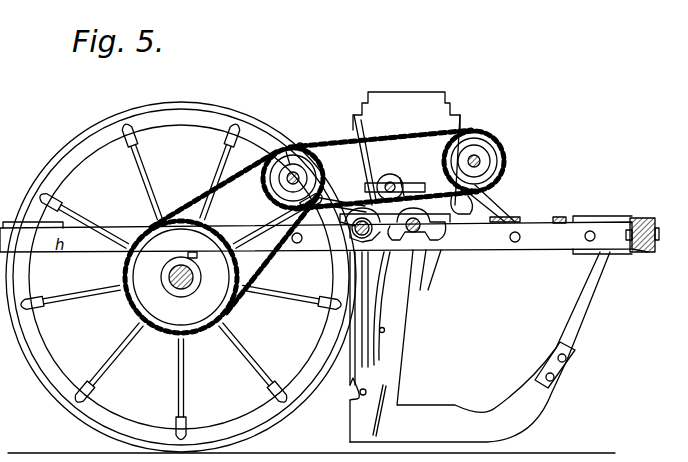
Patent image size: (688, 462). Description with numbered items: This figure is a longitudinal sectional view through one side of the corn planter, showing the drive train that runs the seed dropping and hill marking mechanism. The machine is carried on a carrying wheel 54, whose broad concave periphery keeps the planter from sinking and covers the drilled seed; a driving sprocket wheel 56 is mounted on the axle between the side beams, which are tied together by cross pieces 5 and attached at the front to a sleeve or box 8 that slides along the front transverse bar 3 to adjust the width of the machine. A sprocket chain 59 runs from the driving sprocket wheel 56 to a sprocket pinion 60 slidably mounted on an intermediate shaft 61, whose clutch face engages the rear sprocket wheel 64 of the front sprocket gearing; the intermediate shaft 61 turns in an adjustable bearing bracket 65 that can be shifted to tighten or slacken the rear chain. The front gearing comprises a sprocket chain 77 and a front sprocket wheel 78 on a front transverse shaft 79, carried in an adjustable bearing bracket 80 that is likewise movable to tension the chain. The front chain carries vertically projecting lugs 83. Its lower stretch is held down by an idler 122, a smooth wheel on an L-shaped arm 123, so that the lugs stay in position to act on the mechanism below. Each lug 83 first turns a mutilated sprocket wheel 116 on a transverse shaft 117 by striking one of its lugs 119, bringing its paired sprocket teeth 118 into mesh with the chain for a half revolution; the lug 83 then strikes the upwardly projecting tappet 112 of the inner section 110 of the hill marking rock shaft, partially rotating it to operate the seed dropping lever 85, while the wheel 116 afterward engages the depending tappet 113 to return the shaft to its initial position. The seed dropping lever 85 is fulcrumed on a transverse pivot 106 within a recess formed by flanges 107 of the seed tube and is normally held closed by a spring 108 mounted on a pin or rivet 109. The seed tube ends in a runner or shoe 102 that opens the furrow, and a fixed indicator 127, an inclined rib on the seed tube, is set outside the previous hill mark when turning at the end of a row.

The front transverse bar 3 is at (642, 226).
The cross piece 5 is at (559, 217).
The sleeve or box 8 is at (648, 252).
The carrying wheel 54 is at (55, 374).
The driving sprocket wheel 56 is at (181, 277).
The sprocket chain 59 is at (185, 207).
The sprocket pinion 60 is at (308, 170).
The intermediate shaft 61 is at (260, 183).
The rear sprocket wheel 64 is at (289, 150).
The adjustable bearing bracket 65 is at (250, 280).
The sprocket chain 77 is at (332, 143).
The front sprocket wheel 78 is at (478, 158).
The front transverse shaft 79 is at (482, 158).
The adjustable bearing bracket 80 is at (503, 207).
The vertically projecting lug 83 is at (300, 143).
The seed dropping lever 85 is at (365, 343).
The runner or shoe 102 is at (480, 346).
The transverse pivot 106 is at (358, 398).
The flange 107 is at (360, 391).
The spring 108 is at (375, 300).
The pin or rivet 109 is at (383, 333).
The inner section of hill marking rock shaft 110 is at (352, 232).
The upwardly projecting tappet 112 is at (352, 228).
The depending tappet 113 is at (356, 236).
The mutilated sprocket wheel 116 is at (438, 242).
The transverse shaft 117 is at (411, 240).
The sprocket teeth 118 is at (440, 222).
The lug 119 is at (418, 196).
The idler 122 is at (390, 183).
The arm 123 is at (401, 180).
The fixed indicator 127 is at (387, 391).